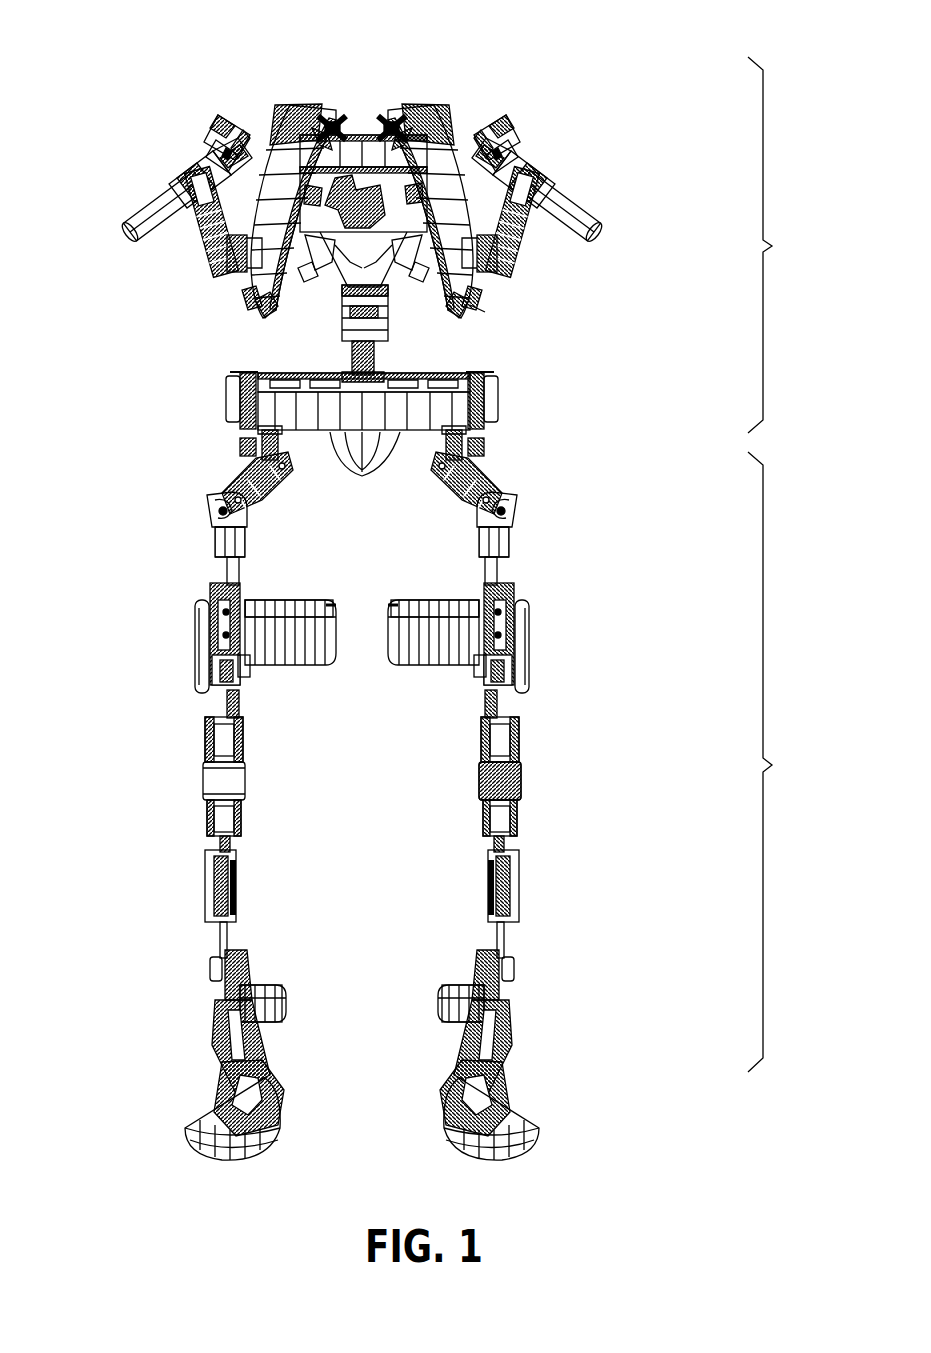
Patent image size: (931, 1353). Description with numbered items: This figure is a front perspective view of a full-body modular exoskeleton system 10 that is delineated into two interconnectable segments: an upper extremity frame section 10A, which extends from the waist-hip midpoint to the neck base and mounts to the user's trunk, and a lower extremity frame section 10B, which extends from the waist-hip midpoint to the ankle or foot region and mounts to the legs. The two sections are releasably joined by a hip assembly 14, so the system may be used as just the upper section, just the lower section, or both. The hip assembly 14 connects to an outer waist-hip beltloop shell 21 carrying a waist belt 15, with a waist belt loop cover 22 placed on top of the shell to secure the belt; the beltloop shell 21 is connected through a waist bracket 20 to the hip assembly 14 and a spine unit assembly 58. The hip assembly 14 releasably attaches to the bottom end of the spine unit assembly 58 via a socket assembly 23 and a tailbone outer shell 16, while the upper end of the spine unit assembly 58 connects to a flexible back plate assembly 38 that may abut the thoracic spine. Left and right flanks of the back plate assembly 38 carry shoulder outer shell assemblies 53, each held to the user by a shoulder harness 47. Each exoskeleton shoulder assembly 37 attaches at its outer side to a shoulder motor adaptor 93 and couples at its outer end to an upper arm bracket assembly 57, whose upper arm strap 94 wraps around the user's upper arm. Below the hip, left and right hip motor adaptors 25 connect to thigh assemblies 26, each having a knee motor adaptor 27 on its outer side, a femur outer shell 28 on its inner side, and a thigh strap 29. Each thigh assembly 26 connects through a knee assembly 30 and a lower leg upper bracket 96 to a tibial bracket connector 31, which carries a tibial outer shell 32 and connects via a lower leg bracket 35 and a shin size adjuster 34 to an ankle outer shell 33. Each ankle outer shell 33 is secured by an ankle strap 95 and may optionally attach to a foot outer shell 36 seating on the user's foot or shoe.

The exoskeleton system 10 is at (150, 82).
The upper extremity frame section 10A is at (786, 245).
The lower extremity frame section 10B is at (791, 762).
The hip assembly 14 is at (252, 474).
The waist belt 15 is at (412, 425).
The tailbone outer shell 16 is at (386, 448).
The waist bracket 20 is at (228, 392).
The outer waist-hip beltloop shell 21 is at (240, 426).
The waist belt loop cover 22 is at (258, 376).
The socket assembly 23 is at (352, 377).
The exoskeleton hip motor adaptor 25 is at (207, 520).
The exoskeleton thigh assembly 26 is at (206, 586).
The exoskeleton knee motor adaptor 27 is at (197, 645).
The femur outer shell 28 is at (240, 600).
The thigh strap 29 is at (306, 668).
The knee assembly 30 is at (200, 780).
The tibial bracket connector 31 is at (210, 880).
The tibial outer shell 32 is at (237, 882).
The ankle outer shell 33 is at (230, 1015).
The shin size adjuster 34 is at (218, 968).
The lower leg bracket 35 is at (222, 938).
The exoskeleton foot outer shell 36 is at (262, 1152).
The exoskeleton shoulder assembly 37 is at (258, 125).
The flexible back plate assembly 38 is at (402, 292).
The shoulder harness 47 is at (482, 306).
The shoulder outer shell assembly 53 is at (335, 128).
The upper arm bracket assembly 57 is at (125, 222).
The spine unit assembly 58 is at (338, 322).
The exoskeleton shoulder motor adaptor 93 is at (205, 124).
The upper arm strap 94 is at (192, 250).
The ankle strap 95 is at (286, 1000).
The lower leg upper bracket 96 is at (218, 846).